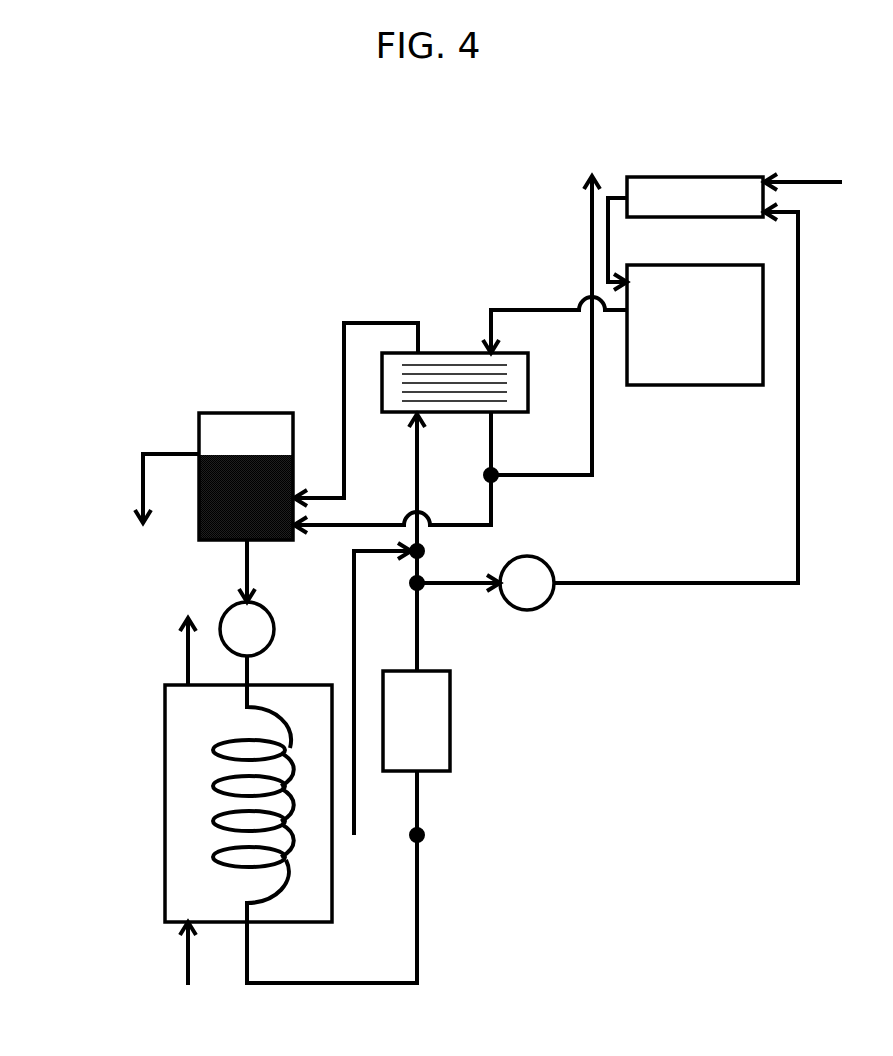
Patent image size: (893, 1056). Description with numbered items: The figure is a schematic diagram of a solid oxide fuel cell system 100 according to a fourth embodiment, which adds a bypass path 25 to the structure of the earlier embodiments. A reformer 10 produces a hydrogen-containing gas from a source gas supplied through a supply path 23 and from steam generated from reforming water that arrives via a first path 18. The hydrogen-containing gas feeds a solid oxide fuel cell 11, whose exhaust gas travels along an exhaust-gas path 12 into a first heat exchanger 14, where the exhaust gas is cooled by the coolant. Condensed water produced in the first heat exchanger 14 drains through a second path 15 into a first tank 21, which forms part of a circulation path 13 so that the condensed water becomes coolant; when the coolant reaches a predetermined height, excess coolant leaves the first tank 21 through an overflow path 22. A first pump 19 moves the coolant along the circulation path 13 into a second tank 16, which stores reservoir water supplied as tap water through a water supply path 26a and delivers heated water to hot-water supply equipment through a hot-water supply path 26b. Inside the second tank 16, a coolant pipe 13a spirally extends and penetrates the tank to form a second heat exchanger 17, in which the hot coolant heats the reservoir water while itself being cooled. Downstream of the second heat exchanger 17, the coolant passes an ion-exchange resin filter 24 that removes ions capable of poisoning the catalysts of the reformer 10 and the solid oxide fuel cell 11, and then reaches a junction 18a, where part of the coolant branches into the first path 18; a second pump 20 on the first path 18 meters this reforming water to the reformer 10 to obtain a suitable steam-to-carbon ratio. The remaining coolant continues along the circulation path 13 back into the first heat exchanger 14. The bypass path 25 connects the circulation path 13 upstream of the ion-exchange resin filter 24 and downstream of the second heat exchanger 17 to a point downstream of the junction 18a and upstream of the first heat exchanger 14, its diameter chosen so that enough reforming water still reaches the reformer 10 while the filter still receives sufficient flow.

The solid oxide fuel cell system 100 is at (290, 150).
The reformer 10 is at (703, 176).
The solid oxide fuel cell 11 is at (703, 264).
The exhaust-gas path 12 is at (511, 309).
The circulation path 13 is at (418, 857).
The coolant pipe 13a is at (293, 848).
The first heat exchanger 14 is at (450, 353).
The second path 15 is at (492, 508).
The second tank 16 is at (164, 728).
The second heat exchanger 17 is at (203, 806).
The first path 18 is at (662, 586).
The junction 18a is at (421, 590).
The first pump 19 is at (275, 629).
The second pump 20 is at (546, 606).
The first tank 21 is at (249, 413).
The overflow path 22 is at (160, 454).
The supply path 23 is at (808, 182).
The ion-exchange resin filter 24 is at (451, 712).
The bypass path 25 is at (355, 633).
The water supply path 26a is at (187, 962).
The hot-water supply path 26b is at (187, 652).